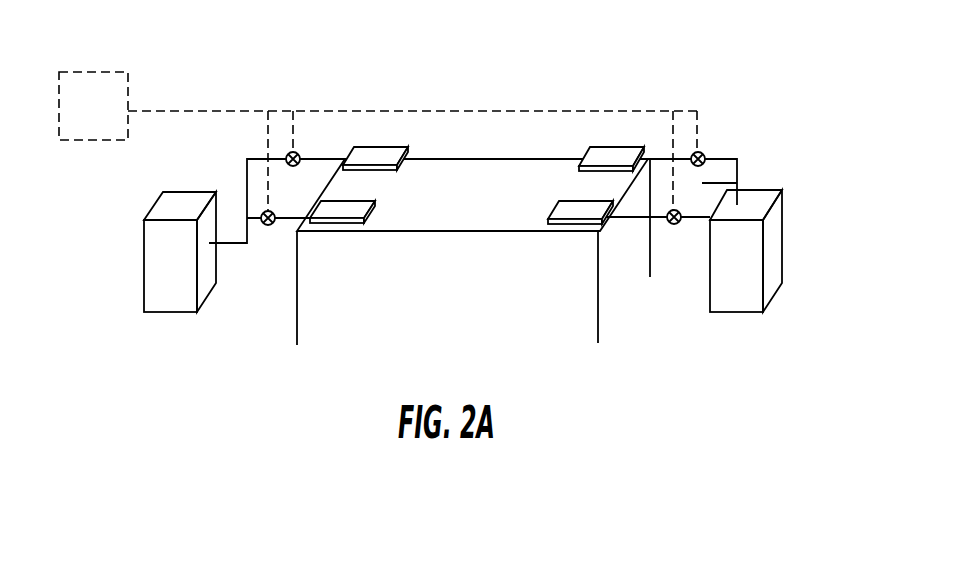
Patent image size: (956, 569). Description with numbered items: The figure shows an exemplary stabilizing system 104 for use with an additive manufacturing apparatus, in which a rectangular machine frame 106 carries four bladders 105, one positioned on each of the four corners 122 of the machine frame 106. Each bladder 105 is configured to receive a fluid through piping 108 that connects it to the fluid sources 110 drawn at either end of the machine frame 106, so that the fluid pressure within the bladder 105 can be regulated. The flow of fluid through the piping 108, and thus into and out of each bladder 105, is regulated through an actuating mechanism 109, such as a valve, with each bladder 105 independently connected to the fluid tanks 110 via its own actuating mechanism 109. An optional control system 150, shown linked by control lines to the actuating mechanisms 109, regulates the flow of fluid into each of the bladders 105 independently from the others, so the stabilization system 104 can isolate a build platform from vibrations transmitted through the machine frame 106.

The stabilization system 104 is at (782, 132).
The bladder 105 is at (383, 157).
The machine frame 106 is at (463, 218).
The piping 108 is at (247, 183).
The actuating mechanism 109 is at (293, 184).
The fluid source 110 is at (162, 300).
The corner 122 is at (300, 216).
The control system 150 is at (99, 88).